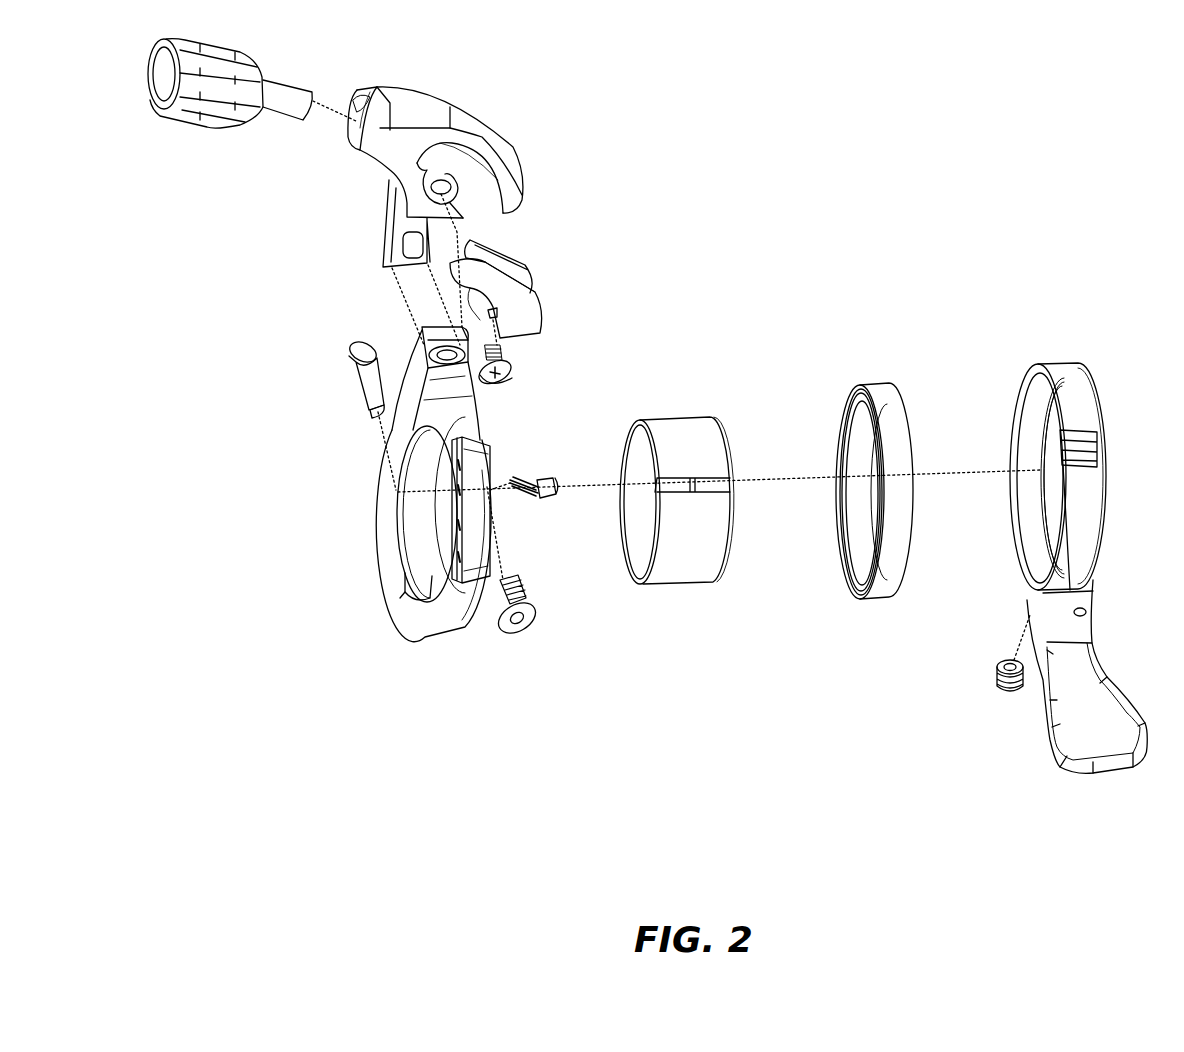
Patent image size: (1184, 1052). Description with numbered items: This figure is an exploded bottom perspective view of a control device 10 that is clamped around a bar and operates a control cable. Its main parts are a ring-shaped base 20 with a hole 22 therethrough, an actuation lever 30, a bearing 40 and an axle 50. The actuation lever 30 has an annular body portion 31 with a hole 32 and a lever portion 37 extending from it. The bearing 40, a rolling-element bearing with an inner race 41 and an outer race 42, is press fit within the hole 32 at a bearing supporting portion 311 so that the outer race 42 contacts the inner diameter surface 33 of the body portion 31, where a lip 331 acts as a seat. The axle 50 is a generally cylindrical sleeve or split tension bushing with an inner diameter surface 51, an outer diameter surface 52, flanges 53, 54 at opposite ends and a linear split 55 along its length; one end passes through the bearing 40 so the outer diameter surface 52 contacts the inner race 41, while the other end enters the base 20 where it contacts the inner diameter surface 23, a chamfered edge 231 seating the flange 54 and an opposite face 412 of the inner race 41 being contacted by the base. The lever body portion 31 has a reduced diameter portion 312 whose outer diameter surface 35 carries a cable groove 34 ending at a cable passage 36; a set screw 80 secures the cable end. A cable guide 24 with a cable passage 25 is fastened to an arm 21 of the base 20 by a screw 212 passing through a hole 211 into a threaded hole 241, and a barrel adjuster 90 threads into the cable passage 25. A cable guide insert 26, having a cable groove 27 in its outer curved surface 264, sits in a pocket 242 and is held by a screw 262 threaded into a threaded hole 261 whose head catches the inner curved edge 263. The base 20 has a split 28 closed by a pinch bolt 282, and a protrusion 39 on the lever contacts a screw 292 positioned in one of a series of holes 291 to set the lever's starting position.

The control device 10 is at (1025, 108).
The base 20 is at (436, 517).
The arm 21 is at (439, 370).
The hole 22 is at (412, 490).
The inner diameter surface 23 is at (418, 530).
The cable guide 24 is at (410, 197).
The cable passage 25 is at (360, 127).
The cable guide insert 26 is at (523, 281).
The cable groove 27 is at (505, 262).
The split 28 is at (400, 598).
The actuation lever 30 is at (1052, 545).
The body portion 31 is at (1049, 449).
The hole 32 is at (1058, 493).
The inner diameter surface 33 is at (1028, 485).
The cable groove 34 is at (1092, 412).
The outer diameter surface 35 is at (1097, 420).
The cable passage 36 is at (1086, 613).
The lever portion 37 is at (1062, 721).
The protrusion 39 is at (1090, 437).
The bearing 40 is at (875, 443).
The inner race 41 is at (855, 505).
The outer race 42 is at (876, 392).
The axle 50 is at (678, 443).
The inner diameter surface 51 is at (642, 530).
The outer diameter surface 52 is at (672, 426).
The flange 53 is at (716, 425).
The flange 54 is at (620, 424).
The split 55 is at (728, 486).
The set screw 80 is at (998, 695).
The barrel adjuster 90 is at (190, 152).
The hole 211 is at (450, 356).
The screw 212 is at (523, 620).
The chamfered edge 231 is at (418, 600).
The threaded hole 241 is at (410, 220).
The pocket 242 is at (485, 178).
The threaded hole 261 is at (448, 189).
The screw 262 is at (500, 380).
The inner curved edge 263 is at (490, 313).
The outer curved surface 264 is at (522, 283).
The pinch bolt 282 is at (350, 350).
The holes 291 is at (455, 490).
The screw 292 is at (552, 482).
The bearing supporting portion 311 is at (1055, 372).
The reduced diameter portion 312 is at (1090, 392).
The lip 331 is at (1045, 547).
The opposite face 412 is at (866, 577).